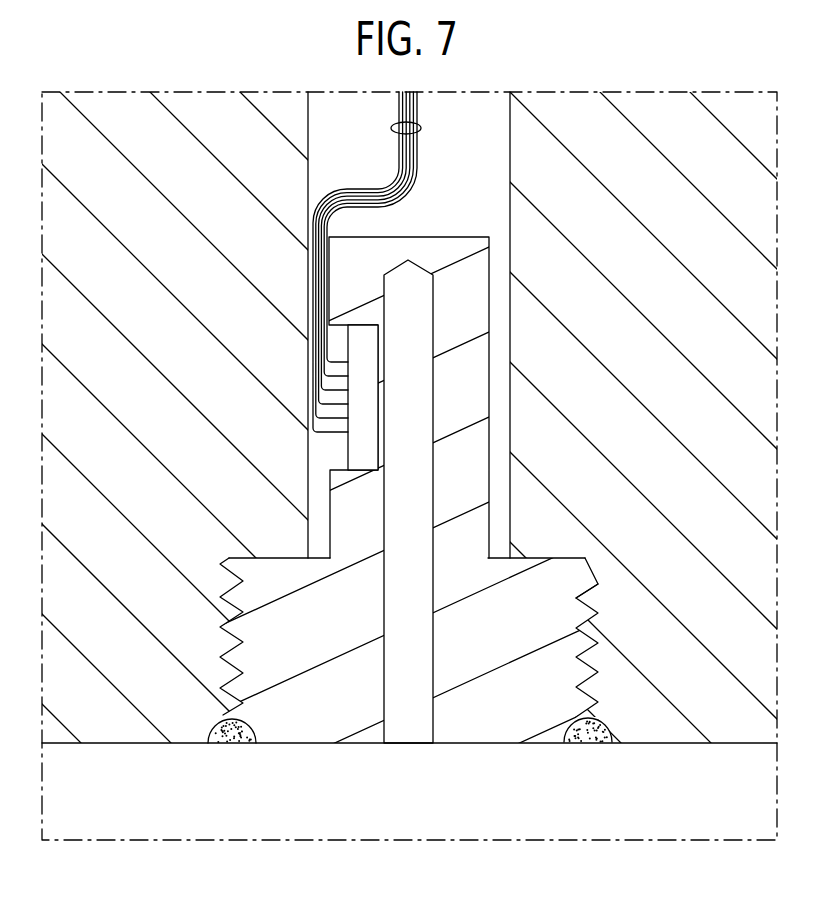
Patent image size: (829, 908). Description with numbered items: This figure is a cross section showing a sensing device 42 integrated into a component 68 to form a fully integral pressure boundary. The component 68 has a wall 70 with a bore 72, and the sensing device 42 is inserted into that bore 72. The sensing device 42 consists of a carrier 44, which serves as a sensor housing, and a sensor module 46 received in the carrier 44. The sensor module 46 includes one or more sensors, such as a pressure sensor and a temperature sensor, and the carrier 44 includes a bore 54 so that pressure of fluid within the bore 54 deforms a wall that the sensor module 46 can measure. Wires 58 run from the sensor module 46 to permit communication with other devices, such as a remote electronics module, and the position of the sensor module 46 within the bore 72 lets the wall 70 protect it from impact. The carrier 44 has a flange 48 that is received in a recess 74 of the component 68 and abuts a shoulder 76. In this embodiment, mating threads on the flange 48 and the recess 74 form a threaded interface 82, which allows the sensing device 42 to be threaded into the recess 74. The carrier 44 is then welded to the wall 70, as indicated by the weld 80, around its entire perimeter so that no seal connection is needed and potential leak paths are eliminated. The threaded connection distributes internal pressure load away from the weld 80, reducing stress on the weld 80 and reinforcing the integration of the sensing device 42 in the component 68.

The sensing device 42 is at (459, 767).
The carrier 44 is at (517, 727).
The sensor module 46 is at (362, 322).
The flange 48 is at (590, 650).
The bore 54 is at (433, 335).
The wires 58 is at (394, 134).
The component 68 is at (36, 476).
The wall 70 is at (722, 722).
The bore 72 is at (510, 145).
The recess 74 is at (243, 643).
The shoulder 76 is at (285, 558).
The weld 80 is at (228, 732).
The threaded interface 82 is at (602, 599).